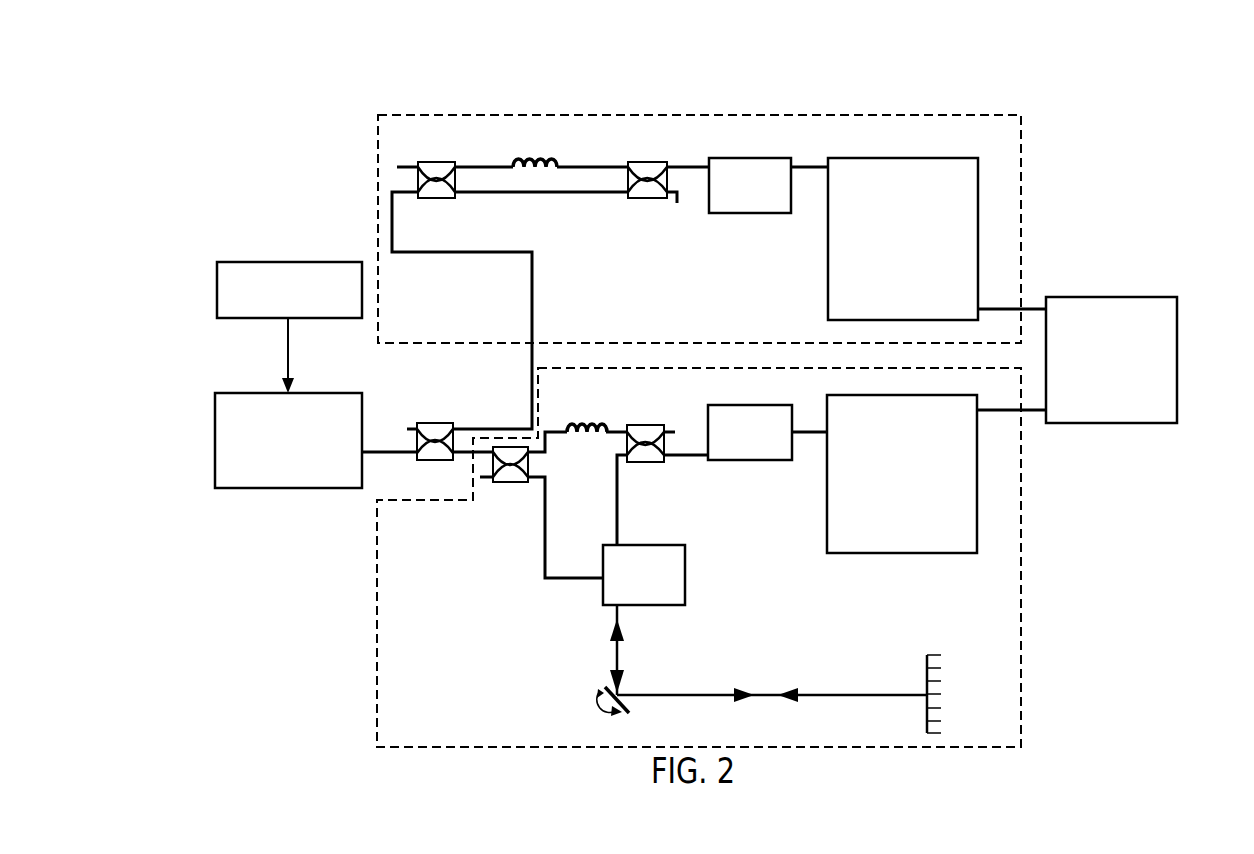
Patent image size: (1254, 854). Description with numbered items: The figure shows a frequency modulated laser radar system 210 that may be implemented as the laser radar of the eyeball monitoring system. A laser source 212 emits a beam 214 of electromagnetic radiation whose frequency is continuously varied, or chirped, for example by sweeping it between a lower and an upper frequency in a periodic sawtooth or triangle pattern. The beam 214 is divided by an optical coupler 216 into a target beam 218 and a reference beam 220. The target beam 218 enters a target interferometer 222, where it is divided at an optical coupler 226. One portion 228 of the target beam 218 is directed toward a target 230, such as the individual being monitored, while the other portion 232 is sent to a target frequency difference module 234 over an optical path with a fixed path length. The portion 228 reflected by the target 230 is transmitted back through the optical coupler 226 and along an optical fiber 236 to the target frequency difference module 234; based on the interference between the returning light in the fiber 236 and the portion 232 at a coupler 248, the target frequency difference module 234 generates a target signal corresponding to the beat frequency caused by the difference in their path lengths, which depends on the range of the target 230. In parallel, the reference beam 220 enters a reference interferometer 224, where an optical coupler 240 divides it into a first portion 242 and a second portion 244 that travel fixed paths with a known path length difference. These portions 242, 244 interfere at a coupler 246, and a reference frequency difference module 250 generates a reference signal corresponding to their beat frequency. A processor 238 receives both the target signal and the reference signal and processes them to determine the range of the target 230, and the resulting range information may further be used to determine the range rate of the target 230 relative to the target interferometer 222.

The frequency modulated laser radar system 210 is at (742, 82).
The laser source 212 is at (283, 490).
The beam 214 is at (407, 457).
The optical coupler 216 is at (437, 423).
The target beam 218 is at (465, 457).
The reference beam 220 is at (532, 302).
The target interferometer 222 is at (1023, 575).
The reference interferometer 224 is at (1023, 200).
The optical coupler 226 is at (507, 485).
The portion of target beam 228 is at (614, 618).
The target 230 is at (927, 657).
The other portion of target beam 232 is at (585, 425).
The target frequency difference module 234 is at (827, 505).
The optical fiber 236 is at (620, 516).
The processor 238 is at (1106, 297).
The optical coupler 240 is at (437, 198).
The first portion of reference beam 242 is at (538, 157).
The second portion of reference beam 244 is at (538, 194).
The coupler 246 is at (647, 202).
The coupler 248 is at (645, 464).
The reference frequency difference module 250 is at (828, 247).